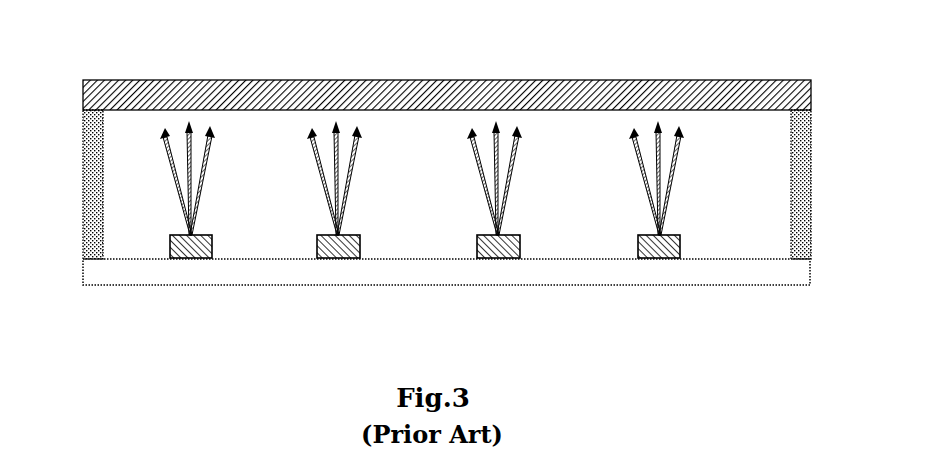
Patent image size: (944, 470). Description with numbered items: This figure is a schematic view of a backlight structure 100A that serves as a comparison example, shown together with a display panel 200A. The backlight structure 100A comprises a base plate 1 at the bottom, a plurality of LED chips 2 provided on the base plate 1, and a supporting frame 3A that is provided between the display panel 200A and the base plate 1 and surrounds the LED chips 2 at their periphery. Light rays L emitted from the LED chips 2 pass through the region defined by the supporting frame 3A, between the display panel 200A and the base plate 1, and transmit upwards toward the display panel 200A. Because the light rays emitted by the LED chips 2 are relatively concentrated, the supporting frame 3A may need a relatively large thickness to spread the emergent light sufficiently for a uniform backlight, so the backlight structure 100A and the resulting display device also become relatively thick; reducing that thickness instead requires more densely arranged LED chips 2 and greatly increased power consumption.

The base plate 1 is at (812, 268).
The LED chips 2 is at (340, 258).
The supporting frame 3A is at (810, 201).
The backlight structure 100A is at (70, 214).
The display panel 200A is at (83, 99).
The light rays L is at (213, 149).